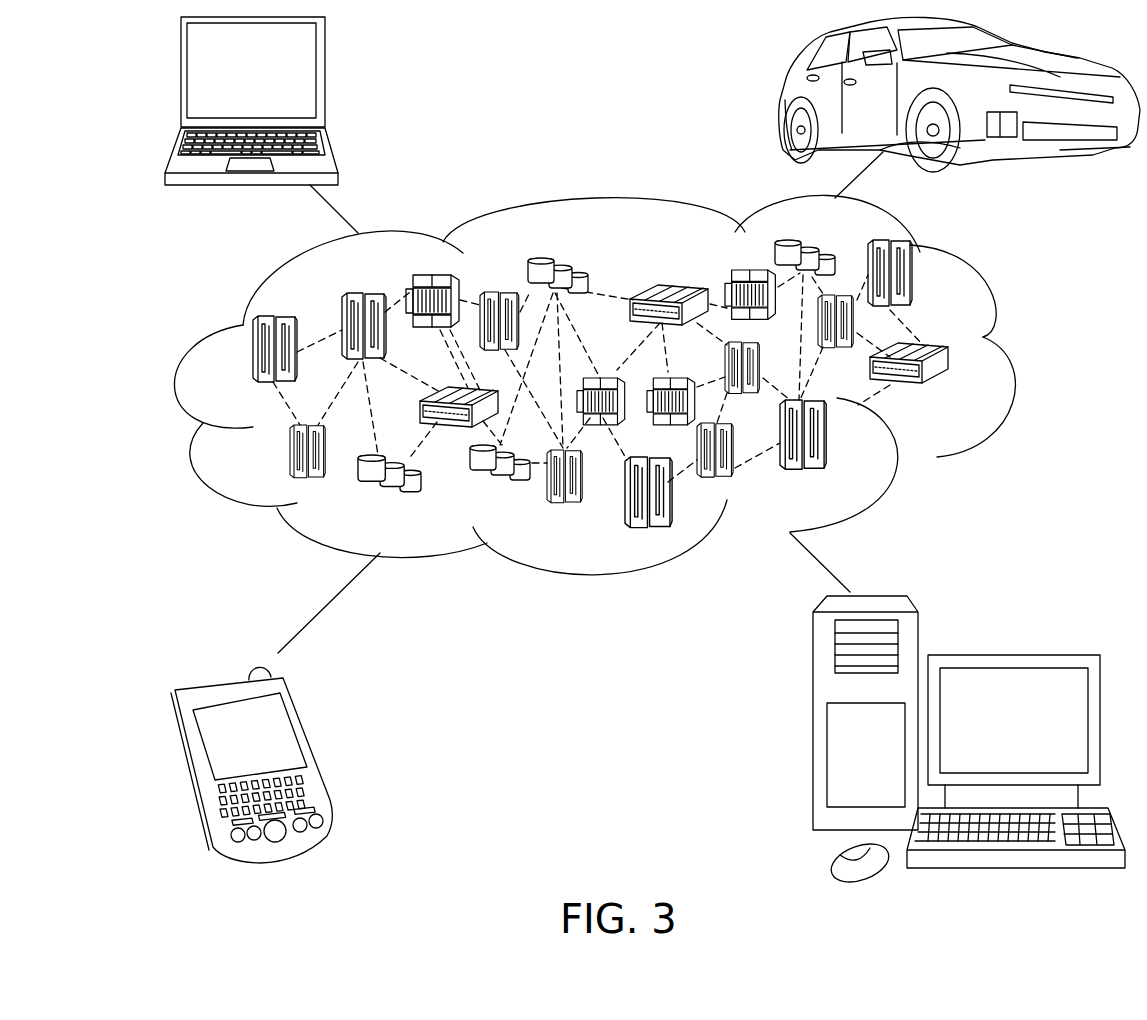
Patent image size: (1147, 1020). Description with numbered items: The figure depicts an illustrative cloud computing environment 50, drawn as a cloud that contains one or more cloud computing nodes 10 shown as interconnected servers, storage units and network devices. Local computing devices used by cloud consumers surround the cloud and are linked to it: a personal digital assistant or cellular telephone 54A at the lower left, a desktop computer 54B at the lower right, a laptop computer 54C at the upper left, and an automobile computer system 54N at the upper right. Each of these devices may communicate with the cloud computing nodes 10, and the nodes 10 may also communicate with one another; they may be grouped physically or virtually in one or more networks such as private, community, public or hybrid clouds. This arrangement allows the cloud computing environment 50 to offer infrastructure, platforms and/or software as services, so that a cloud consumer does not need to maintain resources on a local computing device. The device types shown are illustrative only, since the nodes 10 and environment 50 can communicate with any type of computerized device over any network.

The cloud computing node 10 is at (960, 394).
The cloud computing environment 50 is at (1017, 358).
The personal digital assistant (PDA) or cellular telephone 54A is at (317, 752).
The desktop computer 54B is at (1010, 656).
The laptop computer 54C is at (327, 83).
The automobile computer system 54N is at (786, 99).